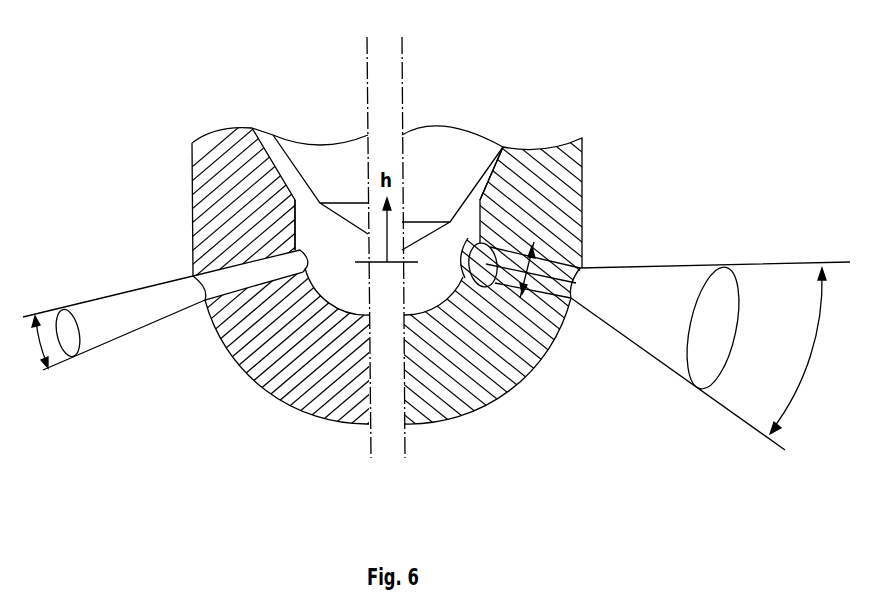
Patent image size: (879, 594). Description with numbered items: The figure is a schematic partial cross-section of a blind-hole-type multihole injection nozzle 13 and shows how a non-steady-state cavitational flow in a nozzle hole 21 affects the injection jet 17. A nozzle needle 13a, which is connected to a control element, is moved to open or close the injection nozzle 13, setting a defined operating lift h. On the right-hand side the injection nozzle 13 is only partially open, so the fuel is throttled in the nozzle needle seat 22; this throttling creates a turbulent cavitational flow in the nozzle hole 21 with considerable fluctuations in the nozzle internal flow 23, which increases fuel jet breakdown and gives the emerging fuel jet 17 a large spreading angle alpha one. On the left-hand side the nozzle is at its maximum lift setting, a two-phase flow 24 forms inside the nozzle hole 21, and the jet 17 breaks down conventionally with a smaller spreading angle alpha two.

The injection nozzle 13 is at (103, 172).
The nozzle needle 13a is at (339, 153).
The injection jet 17 is at (100, 336).
The nozzle hole 21 is at (233, 290).
The nozzle needle seat 22 is at (483, 172).
The nozzle internal flow 23 is at (505, 232).
The two-phase flow 24 is at (246, 255).